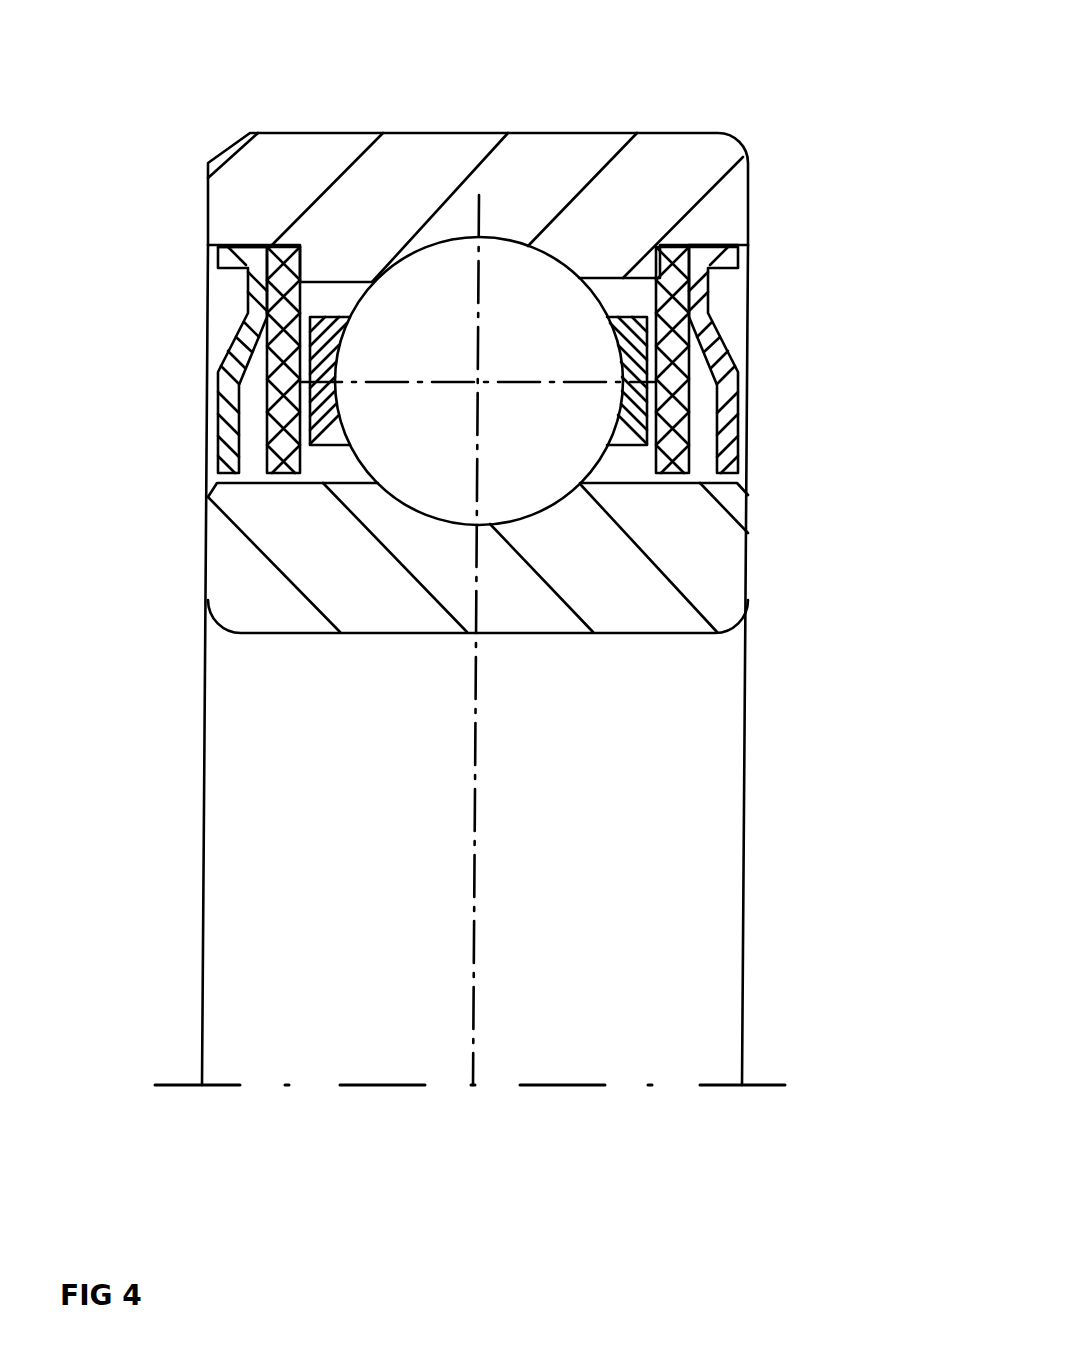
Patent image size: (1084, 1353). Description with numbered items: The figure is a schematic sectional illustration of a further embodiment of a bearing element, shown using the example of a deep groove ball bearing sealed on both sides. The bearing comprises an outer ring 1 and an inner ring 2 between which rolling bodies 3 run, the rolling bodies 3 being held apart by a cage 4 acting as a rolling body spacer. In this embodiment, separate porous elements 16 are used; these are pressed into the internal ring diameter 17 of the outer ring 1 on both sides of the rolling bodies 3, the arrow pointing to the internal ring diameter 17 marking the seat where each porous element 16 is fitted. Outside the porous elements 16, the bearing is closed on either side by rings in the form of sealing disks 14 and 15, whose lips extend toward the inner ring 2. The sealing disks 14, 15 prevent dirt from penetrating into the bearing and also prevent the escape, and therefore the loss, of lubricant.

The outer ring 1 is at (670, 152).
The inner ring 2 is at (722, 580).
The rolling bodies 3 is at (436, 290).
The cage 4 is at (333, 318).
The ring (sealing disk) 14 is at (230, 382).
The ring (sealing disk) 15 is at (722, 352).
The porous elements 16 is at (268, 424).
The internal ring diameter 17 is at (268, 224).